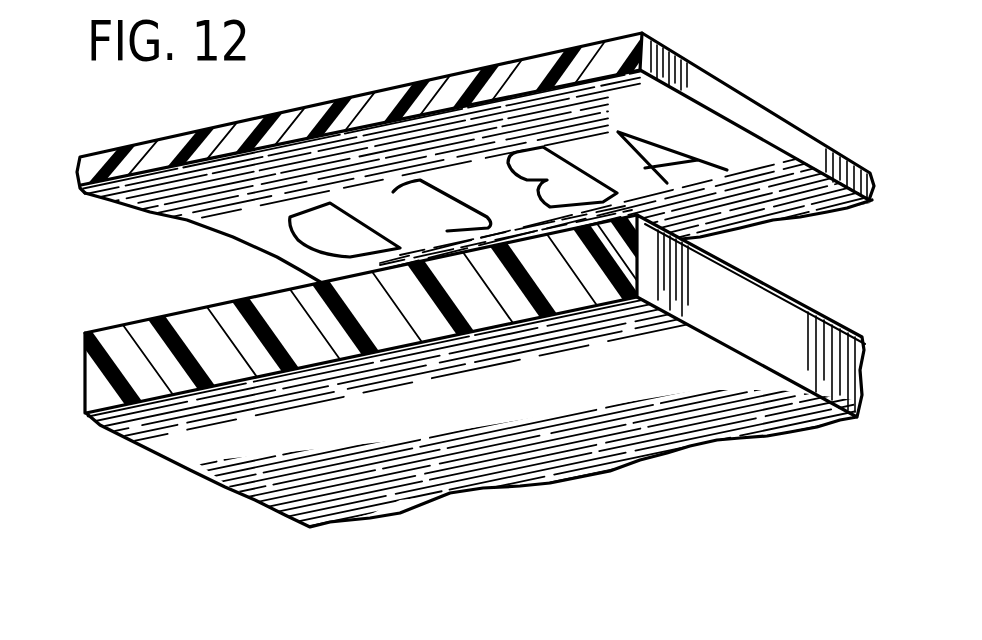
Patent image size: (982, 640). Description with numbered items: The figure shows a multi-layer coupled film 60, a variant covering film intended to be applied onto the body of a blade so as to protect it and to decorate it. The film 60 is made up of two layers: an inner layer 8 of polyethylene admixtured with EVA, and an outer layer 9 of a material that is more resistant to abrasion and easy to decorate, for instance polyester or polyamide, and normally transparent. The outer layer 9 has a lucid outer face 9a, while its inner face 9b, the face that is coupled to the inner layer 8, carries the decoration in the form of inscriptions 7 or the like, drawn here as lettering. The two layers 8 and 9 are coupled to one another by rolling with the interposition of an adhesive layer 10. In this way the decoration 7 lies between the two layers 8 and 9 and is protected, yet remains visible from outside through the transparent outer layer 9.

The multi-layer coupled film 60 is at (112, 222).
The inscriptions 7 is at (340, 207).
The inner layer 8 is at (84, 383).
The outer layer 9 is at (777, 120).
The lucid outer face 9a is at (277, 114).
The inner face 9b is at (187, 200).
The adhesive layer 10 is at (167, 316).